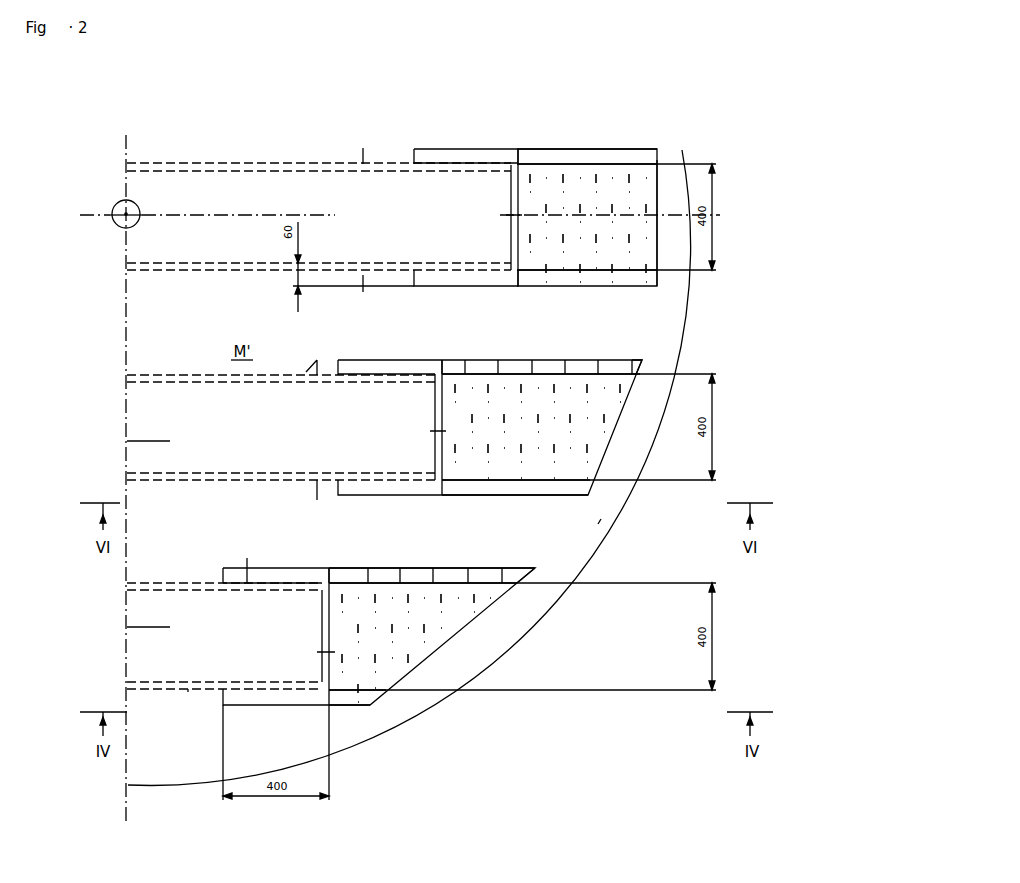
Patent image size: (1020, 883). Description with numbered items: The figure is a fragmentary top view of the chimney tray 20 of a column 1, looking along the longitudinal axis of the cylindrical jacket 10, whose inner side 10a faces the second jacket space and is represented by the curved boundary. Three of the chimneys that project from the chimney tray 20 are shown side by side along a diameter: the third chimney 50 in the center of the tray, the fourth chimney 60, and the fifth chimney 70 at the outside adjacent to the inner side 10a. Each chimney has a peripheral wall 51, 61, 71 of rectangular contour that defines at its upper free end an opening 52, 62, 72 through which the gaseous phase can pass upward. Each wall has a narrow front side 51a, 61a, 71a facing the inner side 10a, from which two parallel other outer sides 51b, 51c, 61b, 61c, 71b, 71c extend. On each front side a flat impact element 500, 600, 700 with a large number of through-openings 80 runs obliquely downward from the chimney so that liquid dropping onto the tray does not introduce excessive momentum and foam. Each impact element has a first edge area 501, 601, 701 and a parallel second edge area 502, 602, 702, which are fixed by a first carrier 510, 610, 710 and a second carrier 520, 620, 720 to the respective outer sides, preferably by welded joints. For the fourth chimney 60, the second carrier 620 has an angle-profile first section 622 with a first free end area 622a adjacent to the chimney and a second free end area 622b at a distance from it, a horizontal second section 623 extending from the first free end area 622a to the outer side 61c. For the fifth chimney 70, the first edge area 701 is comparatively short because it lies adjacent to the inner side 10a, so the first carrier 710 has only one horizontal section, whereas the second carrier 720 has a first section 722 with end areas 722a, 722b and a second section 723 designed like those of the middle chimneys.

The column 1 is at (347, 158).
The cylindrical jacket 10 is at (600, 522).
The inner side of the jacket 10a is at (597, 523).
The chimney tray 20 is at (615, 327).
The third chimney 50 is at (190, 162).
The peripheral wall of the third chimney 51 is at (228, 163).
The front side of the third chimney 51a is at (518, 237).
The other outer side of the third chimney 51b is at (364, 285).
The other outer side of the third chimney 51c is at (367, 163).
The opening of the third chimney 52 is at (170, 238).
The fourth chimney 60 is at (170, 374).
The peripheral wall of the fourth chimney 61 is at (200, 375).
The front side of the fourth chimney 61a is at (443, 431).
The other outer side of the fourth chimney 61b is at (319, 482).
The other outer side of the fourth chimney 61c is at (317, 360).
The opening of the fourth chimney 62 is at (170, 441).
The fifth chimney 70 is at (170, 582).
The peripheral wall of the fifth chimney 71 is at (200, 583).
The front side of the fifth chimney 71a is at (330, 653).
The other outer side of the fifth chimney 71b is at (188, 691).
The other outer side of the fifth chimney 71c is at (248, 581).
The opening of the fifth chimney 72 is at (170, 628).
The through-openings 80 is at (548, 208).
The flat impact element of the third chimney 500 is at (620, 194).
The first edge area of the impact element 501 is at (562, 282).
The second edge area of the impact element 502 is at (606, 152).
The first carrier 510 is at (464, 270).
The second carrier 520 is at (464, 166).
The flat impact element of the fourth chimney 600 is at (581, 419).
The first edge area of the impact element 601 is at (492, 488).
The second edge area of the impact element 602 is at (484, 363).
The first carrier 610 is at (385, 483).
The second carrier 620 is at (384, 377).
The first section of the second carrier 622 is at (510, 362).
The first free end area 622a is at (460, 360).
The second free end area 622b is at (627, 358).
The second section of the second carrier 623 is at (388, 372).
The flat impact element of the fifth chimney 700 is at (393, 652).
The first edge area of the impact element 701 is at (355, 698).
The second edge area of the impact element 702 is at (415, 572).
The first carrier 710 is at (272, 696).
The second carrier 720 is at (280, 586).
The first section of the second carrier 722 is at (395, 566).
The first free end area 722a is at (338, 568).
The second free end area 722b is at (503, 568).
The second section of the second carrier 723 is at (300, 568).